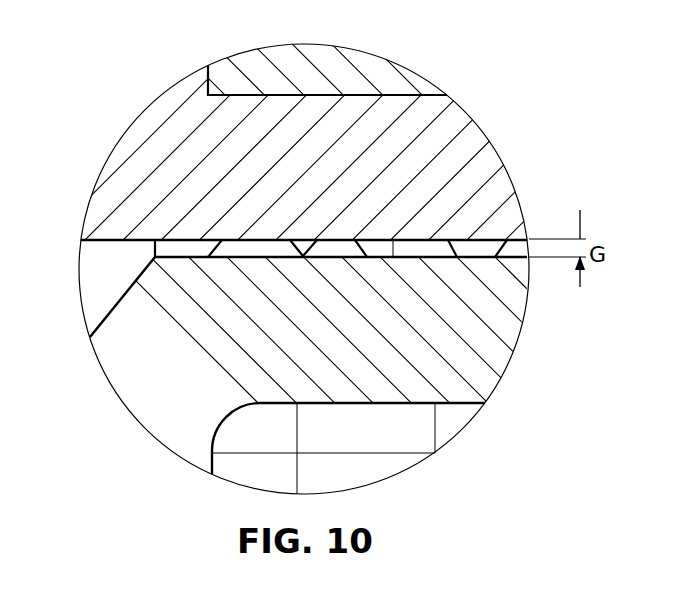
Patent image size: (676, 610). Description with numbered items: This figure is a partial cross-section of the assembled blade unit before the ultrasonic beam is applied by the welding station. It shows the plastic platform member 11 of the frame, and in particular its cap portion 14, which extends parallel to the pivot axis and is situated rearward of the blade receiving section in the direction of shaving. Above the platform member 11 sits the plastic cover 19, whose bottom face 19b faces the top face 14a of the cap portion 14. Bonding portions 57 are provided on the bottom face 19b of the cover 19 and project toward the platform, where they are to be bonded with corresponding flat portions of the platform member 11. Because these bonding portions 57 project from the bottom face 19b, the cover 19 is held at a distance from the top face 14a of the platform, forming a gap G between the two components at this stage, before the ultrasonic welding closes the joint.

The cover 19 is at (493, 155).
The bottom face 19b is at (208, 257).
The bonding portions 57 is at (303, 255).
The cap portion 14 is at (383, 381).
The top face 14a is at (440, 260).
The platform member 11 is at (503, 362).